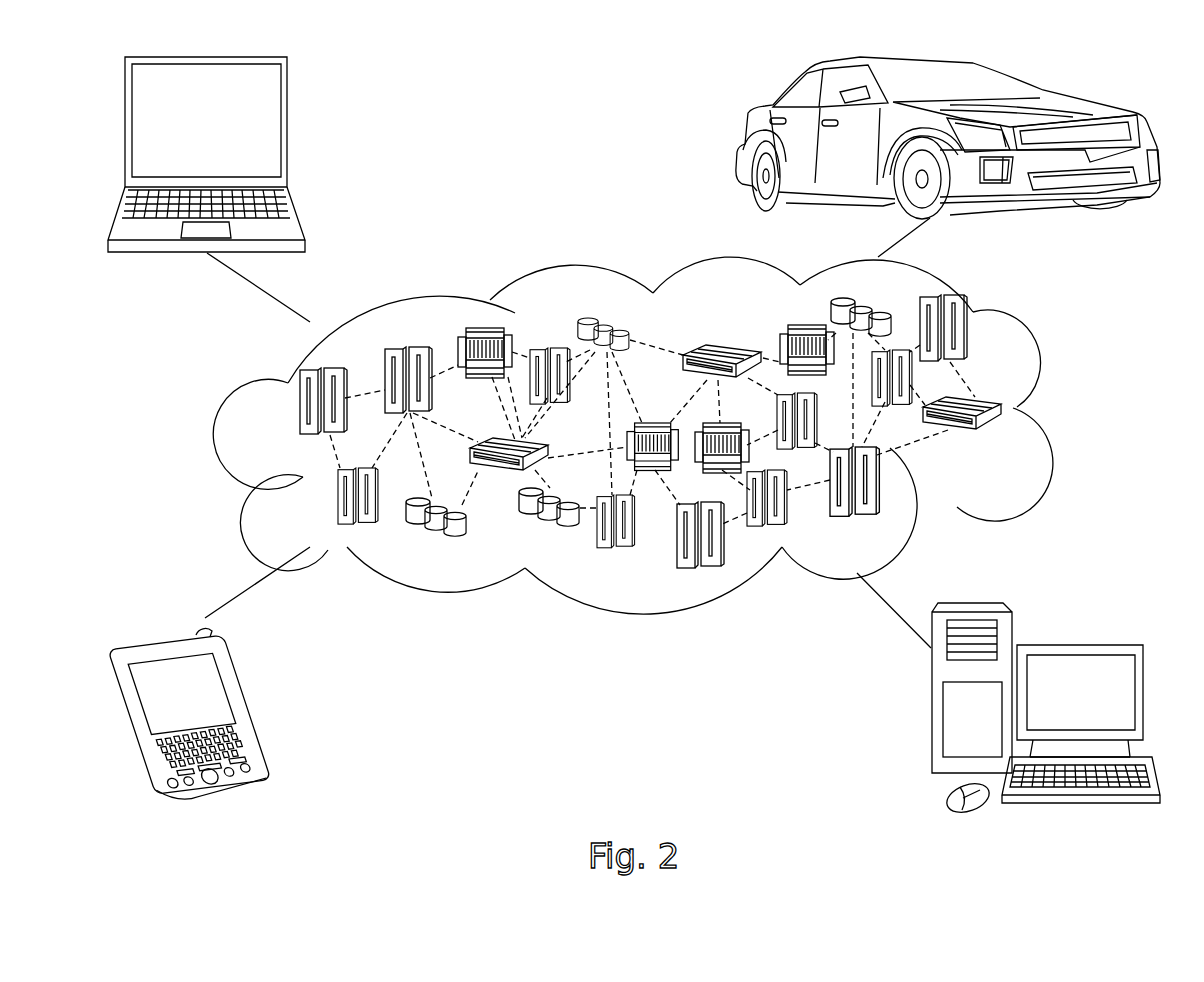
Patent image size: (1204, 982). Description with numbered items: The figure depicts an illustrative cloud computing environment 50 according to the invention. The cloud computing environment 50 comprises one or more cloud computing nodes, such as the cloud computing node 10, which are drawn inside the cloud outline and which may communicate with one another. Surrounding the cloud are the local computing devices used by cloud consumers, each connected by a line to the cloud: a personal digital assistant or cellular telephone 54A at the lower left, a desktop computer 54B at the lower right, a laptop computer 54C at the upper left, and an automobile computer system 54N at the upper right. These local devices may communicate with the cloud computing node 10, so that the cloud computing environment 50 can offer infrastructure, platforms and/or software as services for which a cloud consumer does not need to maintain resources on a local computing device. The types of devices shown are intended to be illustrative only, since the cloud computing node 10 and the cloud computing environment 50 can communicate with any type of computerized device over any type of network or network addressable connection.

The laptop computer 54C is at (303, 152).
The automobile computer system 54N is at (743, 135).
The personal digital assistant (PDA) or cellular telephone 54A is at (253, 713).
The desktop computer 54B is at (932, 743).
The cloud computing environment 50 is at (1072, 423).
The cloud computing node 10 is at (1005, 440).